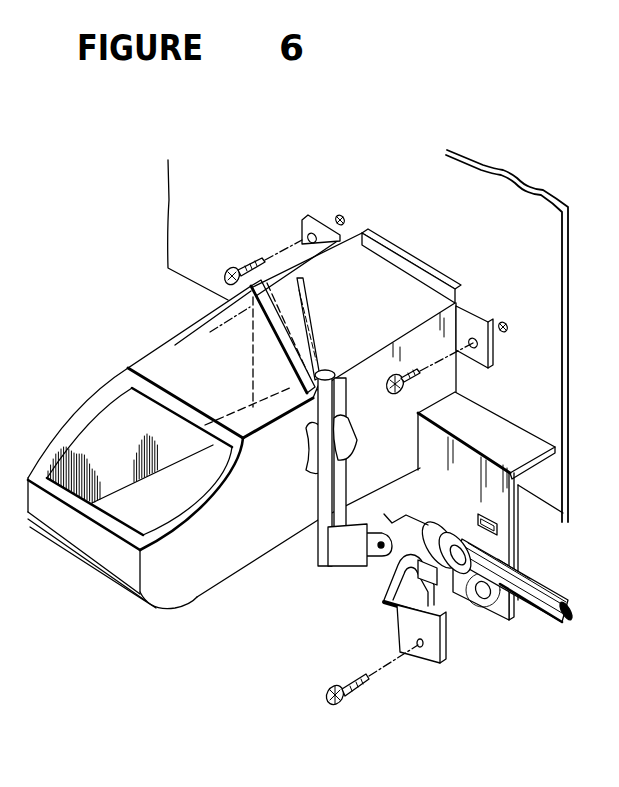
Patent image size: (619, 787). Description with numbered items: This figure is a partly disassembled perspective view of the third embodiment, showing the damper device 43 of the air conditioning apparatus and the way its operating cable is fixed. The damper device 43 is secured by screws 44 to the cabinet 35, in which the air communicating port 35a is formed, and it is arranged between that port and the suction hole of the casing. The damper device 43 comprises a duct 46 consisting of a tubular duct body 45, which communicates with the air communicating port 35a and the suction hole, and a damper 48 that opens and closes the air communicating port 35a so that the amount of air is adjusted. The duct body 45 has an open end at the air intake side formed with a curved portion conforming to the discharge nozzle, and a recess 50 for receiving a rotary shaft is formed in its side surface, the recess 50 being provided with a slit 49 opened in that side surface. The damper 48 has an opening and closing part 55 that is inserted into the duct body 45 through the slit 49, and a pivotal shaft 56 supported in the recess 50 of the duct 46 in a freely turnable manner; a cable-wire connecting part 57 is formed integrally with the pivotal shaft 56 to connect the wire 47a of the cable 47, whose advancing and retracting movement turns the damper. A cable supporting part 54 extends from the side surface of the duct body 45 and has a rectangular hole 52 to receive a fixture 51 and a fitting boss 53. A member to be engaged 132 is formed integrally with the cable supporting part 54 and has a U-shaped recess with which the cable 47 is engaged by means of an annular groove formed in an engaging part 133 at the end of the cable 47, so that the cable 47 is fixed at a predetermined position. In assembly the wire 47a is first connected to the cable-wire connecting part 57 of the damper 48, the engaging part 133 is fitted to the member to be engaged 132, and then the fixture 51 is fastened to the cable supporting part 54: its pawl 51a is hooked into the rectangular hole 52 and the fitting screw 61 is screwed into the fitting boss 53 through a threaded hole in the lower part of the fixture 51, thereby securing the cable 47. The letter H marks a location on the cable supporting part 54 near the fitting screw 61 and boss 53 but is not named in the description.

The cabinet 35 is at (537, 192).
The air communicating port 35a is at (437, 282).
The damper device 43 is at (140, 352).
The screws 44 is at (232, 266).
The duct body 45 is at (192, 327).
The duct 46 is at (195, 604).
The cable 47 is at (568, 608).
The wire 47a is at (400, 598).
The damper 48 is at (316, 578).
The slit 49 is at (312, 432).
The recess 50 is at (340, 478).
The fixture 51 is at (422, 663).
The pawl 51a is at (441, 623).
The rectangular hole 52 is at (500, 535).
The fitting boss 53 is at (527, 562).
The cable supporting part 54 is at (518, 424).
The opening and closing part 55 is at (322, 290).
The pivotal shaft 56 is at (318, 550).
The cable-wire connecting part 57 is at (420, 537).
The fitting screw 61 is at (343, 708).
The member to be engaged 132 is at (450, 516).
The engaging part 133 is at (392, 622).
The plate H is at (513, 636).